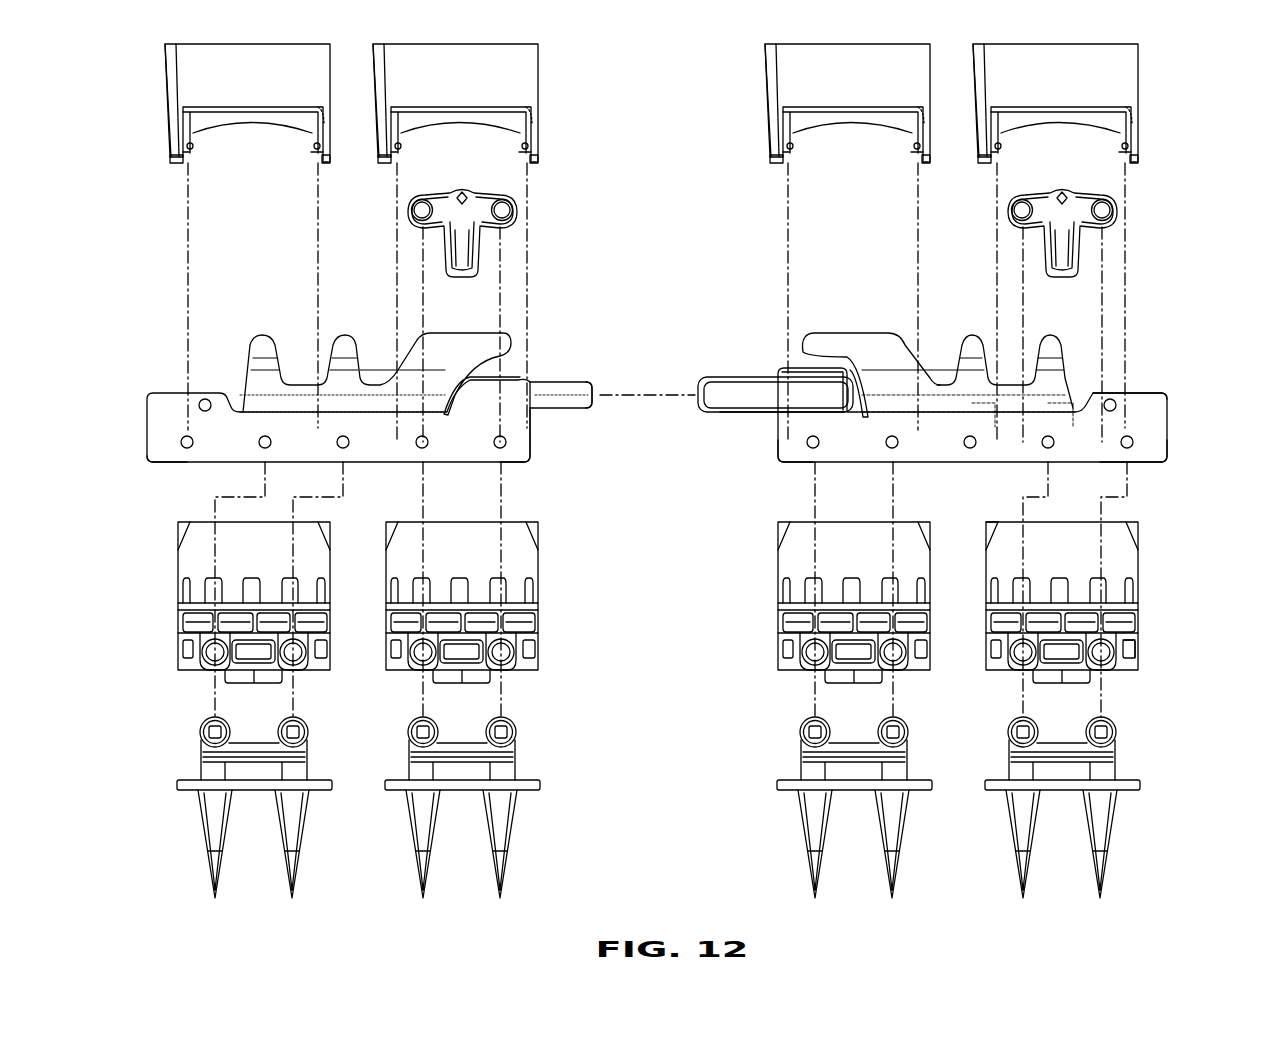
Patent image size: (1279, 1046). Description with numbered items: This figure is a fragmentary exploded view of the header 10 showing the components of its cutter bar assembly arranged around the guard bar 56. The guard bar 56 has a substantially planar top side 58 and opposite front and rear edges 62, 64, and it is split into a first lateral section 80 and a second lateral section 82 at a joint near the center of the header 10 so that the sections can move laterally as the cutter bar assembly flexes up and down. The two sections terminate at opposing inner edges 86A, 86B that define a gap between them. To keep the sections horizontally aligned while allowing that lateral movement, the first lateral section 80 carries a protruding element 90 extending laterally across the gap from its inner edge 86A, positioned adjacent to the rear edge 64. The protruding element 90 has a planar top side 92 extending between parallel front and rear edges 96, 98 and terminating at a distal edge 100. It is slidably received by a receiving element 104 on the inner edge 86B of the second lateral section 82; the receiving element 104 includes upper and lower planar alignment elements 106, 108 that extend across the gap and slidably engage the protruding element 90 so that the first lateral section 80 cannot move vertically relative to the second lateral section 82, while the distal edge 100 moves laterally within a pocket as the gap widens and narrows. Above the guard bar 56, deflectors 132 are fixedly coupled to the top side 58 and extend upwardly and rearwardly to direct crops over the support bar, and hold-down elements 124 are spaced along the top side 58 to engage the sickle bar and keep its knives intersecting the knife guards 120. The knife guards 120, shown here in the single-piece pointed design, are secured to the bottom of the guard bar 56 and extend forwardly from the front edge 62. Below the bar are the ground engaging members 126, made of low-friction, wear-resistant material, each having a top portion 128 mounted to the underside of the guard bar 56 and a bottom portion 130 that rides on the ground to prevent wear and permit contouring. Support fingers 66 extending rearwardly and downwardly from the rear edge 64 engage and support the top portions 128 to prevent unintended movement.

The header 10 is at (1234, 131).
The guard bar 56 is at (973, 411).
The top side 58 is at (1153, 453).
The front edge 62 is at (1135, 463).
The rear edge 64 is at (1155, 392).
The support fingers 66 is at (265, 338).
The first lateral section 80 is at (150, 470).
The second lateral section 82 is at (1143, 365).
The inner edge 86A is at (535, 460).
The inner edge 86B is at (780, 470).
The protruding element 90 is at (379, 424).
The top side 92 is at (550, 400).
The front edge 96 is at (575, 410).
The rear edge 98 is at (577, 380).
The distal edge 100 is at (595, 402).
The receiving element 104 is at (756, 352).
The upper alignment element 106 is at (725, 385).
The lower alignment element 108 is at (735, 413).
The knife guards 120 is at (1113, 822).
The hold-down elements 124 is at (1122, 210).
The ground engaging members 126 is at (1088, 624).
The top portion 128 is at (1128, 663).
The bottom portion 130 is at (985, 560).
The deflectors 132 is at (1118, 82).